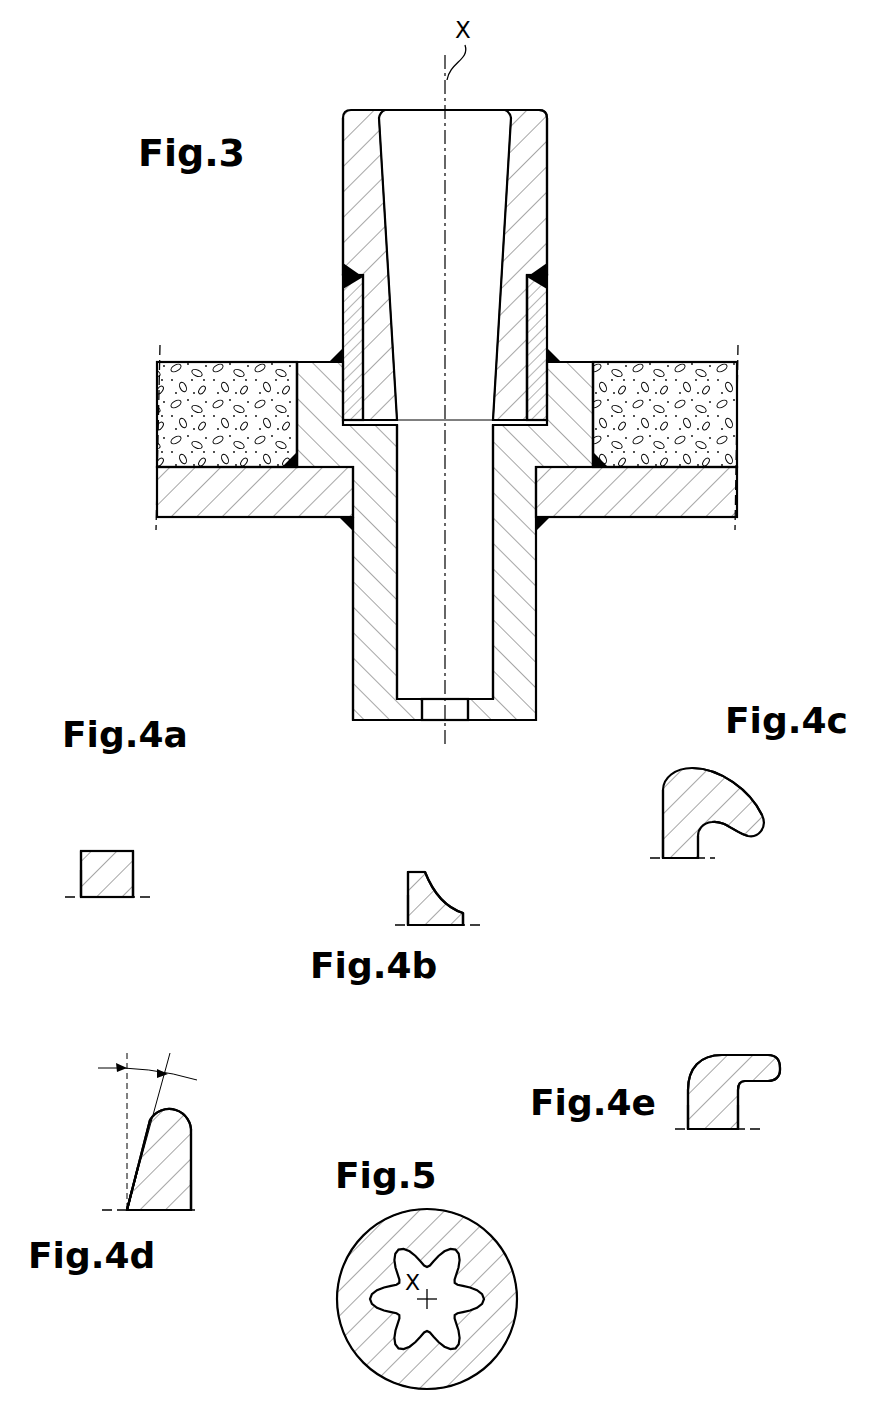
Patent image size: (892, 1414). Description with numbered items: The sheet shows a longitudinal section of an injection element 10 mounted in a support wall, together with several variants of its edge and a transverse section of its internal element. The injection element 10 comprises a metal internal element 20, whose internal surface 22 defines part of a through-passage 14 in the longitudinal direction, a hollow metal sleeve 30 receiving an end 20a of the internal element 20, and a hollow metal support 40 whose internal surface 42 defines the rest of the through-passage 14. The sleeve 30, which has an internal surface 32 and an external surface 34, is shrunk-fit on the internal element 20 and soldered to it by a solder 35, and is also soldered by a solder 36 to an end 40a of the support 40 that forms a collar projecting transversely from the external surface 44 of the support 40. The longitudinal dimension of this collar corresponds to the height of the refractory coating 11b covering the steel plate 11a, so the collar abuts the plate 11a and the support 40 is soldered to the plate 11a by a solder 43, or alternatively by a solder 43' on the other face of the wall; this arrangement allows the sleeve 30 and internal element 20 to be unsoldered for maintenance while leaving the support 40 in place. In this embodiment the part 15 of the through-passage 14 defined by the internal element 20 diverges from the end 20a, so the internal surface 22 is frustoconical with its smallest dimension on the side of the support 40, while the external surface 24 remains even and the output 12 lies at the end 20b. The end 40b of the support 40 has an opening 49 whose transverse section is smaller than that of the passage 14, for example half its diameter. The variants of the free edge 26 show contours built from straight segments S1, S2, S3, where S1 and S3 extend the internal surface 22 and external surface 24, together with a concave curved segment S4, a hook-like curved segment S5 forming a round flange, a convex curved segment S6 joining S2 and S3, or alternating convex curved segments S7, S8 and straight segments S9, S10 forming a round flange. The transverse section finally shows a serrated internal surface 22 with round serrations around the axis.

In FIG. 3, the injection element 10 is at (642, 230).
In FIG. 3, the steel plate 11a is at (173, 492).
In FIG. 3, the refractory coating 11b is at (160, 415).
In FIG. 3, the output 12 is at (378, 110).
In FIG. 3, the through-passage 14 is at (473, 128).
In FIG. 3, the part of the through-passage 15 is at (388, 174).
In FIG. 3, the internal element 20 is at (532, 146).
In FIG. 5, the internal element 20 is at (526, 1246).
In FIG. 3, the end of the internal element 20a is at (375, 335).
In FIG. 3, the end of the internal element 20b is at (350, 147).
In FIG. 3, the internal surface 22 is at (500, 257).
In FIG. 4A, the internal surface 22 is at (81, 882).
In FIG. 4B, the internal surface 22 is at (408, 915).
In FIG. 4C, the internal surface 22 is at (657, 842).
In FIG. 4D, the internal surface 22 is at (127, 1203).
In FIG. 4E, the internal surface 22 is at (688, 1113).
In FIG. 5, the internal surface 22 is at (452, 1256).
In FIG. 3, the external surface 24 is at (552, 187).
In FIG. 4A, the external surface 24 is at (133, 882).
In FIG. 4B, the external surface 24 is at (463, 918).
In FIG. 4C, the external surface 24 is at (710, 848).
In FIG. 4D, the external surface 24 is at (192, 1197).
In FIG. 4E, the external surface 24 is at (738, 1125).
In FIG. 5, the external surface 24 is at (514, 1330).
In FIG. 3, the free edge 26 is at (538, 112).
In FIG. 4A, the free edge 26 is at (108, 862).
In FIG. 4B, the free edge 26 is at (435, 863).
In FIG. 4C, the free edge 26 is at (690, 778).
In FIG. 4D, the free edge 26 is at (170, 1130).
In FIG. 4E, the free edge 26 is at (718, 1068).
In FIG. 3, the sleeve 30 is at (352, 318).
In FIG. 3, the internal surface 32 is at (522, 308).
In FIG. 3, the external surface 34 is at (552, 318).
In FIG. 3, the solder 35 is at (345, 277).
In FIG. 3, the solder 36 is at (337, 358).
In FIG. 3, the support 40 is at (520, 548).
In FIG. 3, the end of the support 40a is at (573, 373).
In FIG. 3, the end of the support 40b is at (367, 670).
In FIG. 3, the internal surface 42 is at (490, 603).
In FIG. 3, the solder 43 is at (354, 452).
In FIG. 3, the solder 43' is at (412, 549).
In FIG. 3, the external surface 44 is at (350, 616).
In FIG. 3, the opening 49 is at (433, 710).
In FIG. 4A, the straight segment S1 is at (81, 866).
In FIG. 4B, the straight segment S1 is at (408, 882).
In FIG. 4C, the straight segment S1 is at (663, 805).
In FIG. 4D, the straight segment S1 is at (128, 1193).
In FIG. 4E, the straight segment S1 is at (688, 1102).
In FIG. 4A, the straight segment S2 is at (99, 851).
In FIG. 4B, the straight segment S2 is at (425, 872).
In FIG. 4D, the straight segment S2 is at (145, 1135).
In FIG. 4A, the straight segment S3 is at (133, 868).
In FIG. 4B, the straight segment S3 is at (466, 925).
In FIG. 4C, the straight segment S3 is at (745, 834).
In FIG. 4D, the straight segment S3 is at (192, 1178).
In FIG. 4E, the straight segment S3 is at (747, 1113).
In FIG. 4B, the curved segment S4 is at (448, 898).
In FIG. 4C, the curved segment S5 is at (742, 785).
In FIG. 4D, the curved segment S6 is at (174, 1117).
In FIG. 4E, the curved segment S7 is at (712, 1065).
In FIG. 4E, the curved segment S8 is at (781, 1070).
In FIG. 4E, the straight segment S9 is at (750, 1055).
In FIG. 4E, the straight segment S10 is at (757, 1084).